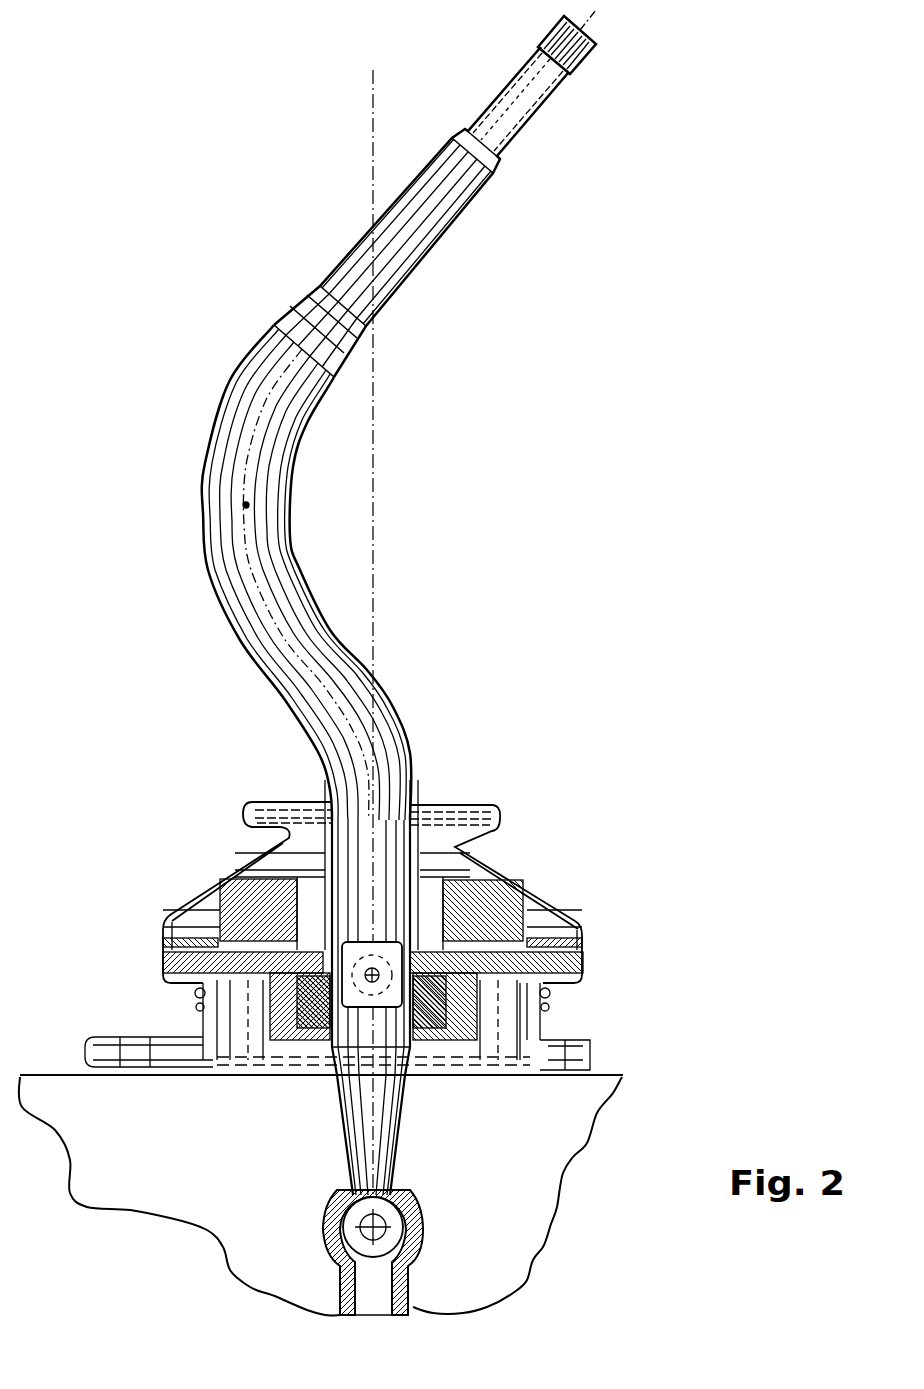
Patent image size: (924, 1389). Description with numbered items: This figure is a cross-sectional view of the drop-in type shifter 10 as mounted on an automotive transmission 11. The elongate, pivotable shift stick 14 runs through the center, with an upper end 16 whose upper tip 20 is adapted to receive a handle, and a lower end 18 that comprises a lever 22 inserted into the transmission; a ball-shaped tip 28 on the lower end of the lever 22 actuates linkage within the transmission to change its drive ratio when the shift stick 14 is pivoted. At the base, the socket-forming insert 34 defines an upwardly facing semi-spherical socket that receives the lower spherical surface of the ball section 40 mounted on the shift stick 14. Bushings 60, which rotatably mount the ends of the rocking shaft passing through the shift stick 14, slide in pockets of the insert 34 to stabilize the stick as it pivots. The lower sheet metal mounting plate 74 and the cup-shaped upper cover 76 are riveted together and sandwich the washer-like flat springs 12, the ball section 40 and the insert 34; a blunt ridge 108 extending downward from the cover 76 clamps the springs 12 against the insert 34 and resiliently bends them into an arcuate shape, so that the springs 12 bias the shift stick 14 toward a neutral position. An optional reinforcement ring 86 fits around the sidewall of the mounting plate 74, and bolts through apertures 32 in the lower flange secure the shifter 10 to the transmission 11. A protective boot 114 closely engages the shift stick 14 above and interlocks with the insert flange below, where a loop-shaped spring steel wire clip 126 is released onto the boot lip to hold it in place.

The drop-in type shifter 10 is at (297, 101).
The upper tip 20 is at (570, 20).
The shift stick 14 is at (437, 251).
The upper end 16 is at (233, 383).
The lever 22 is at (410, 1120).
The bushings 60 is at (348, 928).
The protective boot 114 is at (428, 938).
The ridge 108 is at (200, 895).
The flat springs 12 is at (497, 836).
The cover 76 is at (228, 897).
The insert 34 is at (163, 963).
The mounting plate 74 is at (170, 1075).
The ball section 40 is at (505, 1062).
The apertures 32 is at (122, 1072).
The wire clip 126 is at (196, 996).
The reinforcement ring 86 is at (62, 1062).
The automotive transmission 11 is at (130, 1173).
The lower end 18 is at (343, 1178).
The ball-shaped tip 28 is at (400, 1197).